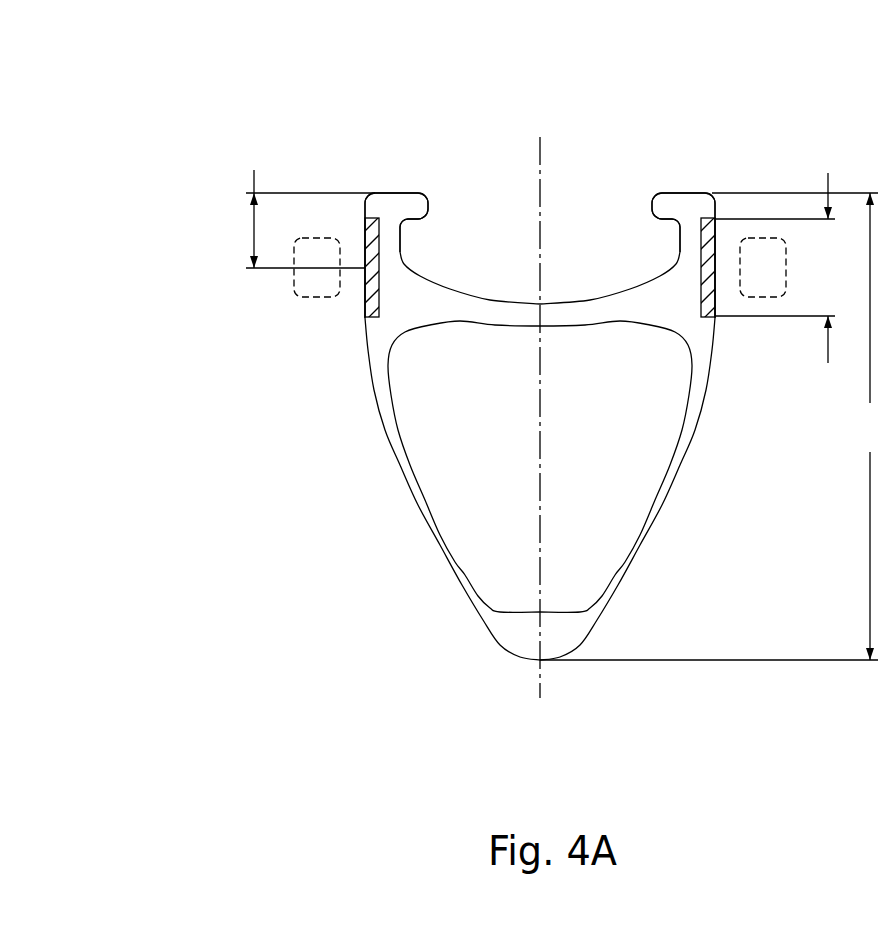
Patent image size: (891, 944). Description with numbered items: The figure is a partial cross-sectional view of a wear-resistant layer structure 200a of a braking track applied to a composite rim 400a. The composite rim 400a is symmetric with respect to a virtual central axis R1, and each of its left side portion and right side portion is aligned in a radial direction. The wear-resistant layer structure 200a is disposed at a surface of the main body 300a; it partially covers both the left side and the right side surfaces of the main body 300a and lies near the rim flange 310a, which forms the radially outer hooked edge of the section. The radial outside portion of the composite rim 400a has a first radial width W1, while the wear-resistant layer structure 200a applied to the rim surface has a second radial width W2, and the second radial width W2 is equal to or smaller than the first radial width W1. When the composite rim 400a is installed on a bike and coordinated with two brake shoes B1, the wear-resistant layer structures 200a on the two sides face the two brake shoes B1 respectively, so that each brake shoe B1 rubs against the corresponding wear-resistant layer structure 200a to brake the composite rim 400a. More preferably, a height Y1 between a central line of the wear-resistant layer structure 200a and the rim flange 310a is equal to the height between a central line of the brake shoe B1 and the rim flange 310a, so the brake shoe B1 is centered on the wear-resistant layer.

The composite rim 400a is at (160, 108).
The main body 300a is at (392, 447).
The rim flange 310a is at (674, 193).
The wear-resistant layer structure 200a is at (366, 302).
The brake shoe B1 is at (316, 237).
The virtual central axis R1 is at (540, 167).
The height Y1 is at (302, 201).
The first radial width W1 is at (713, 426).
The second radial width W2 is at (781, 268).